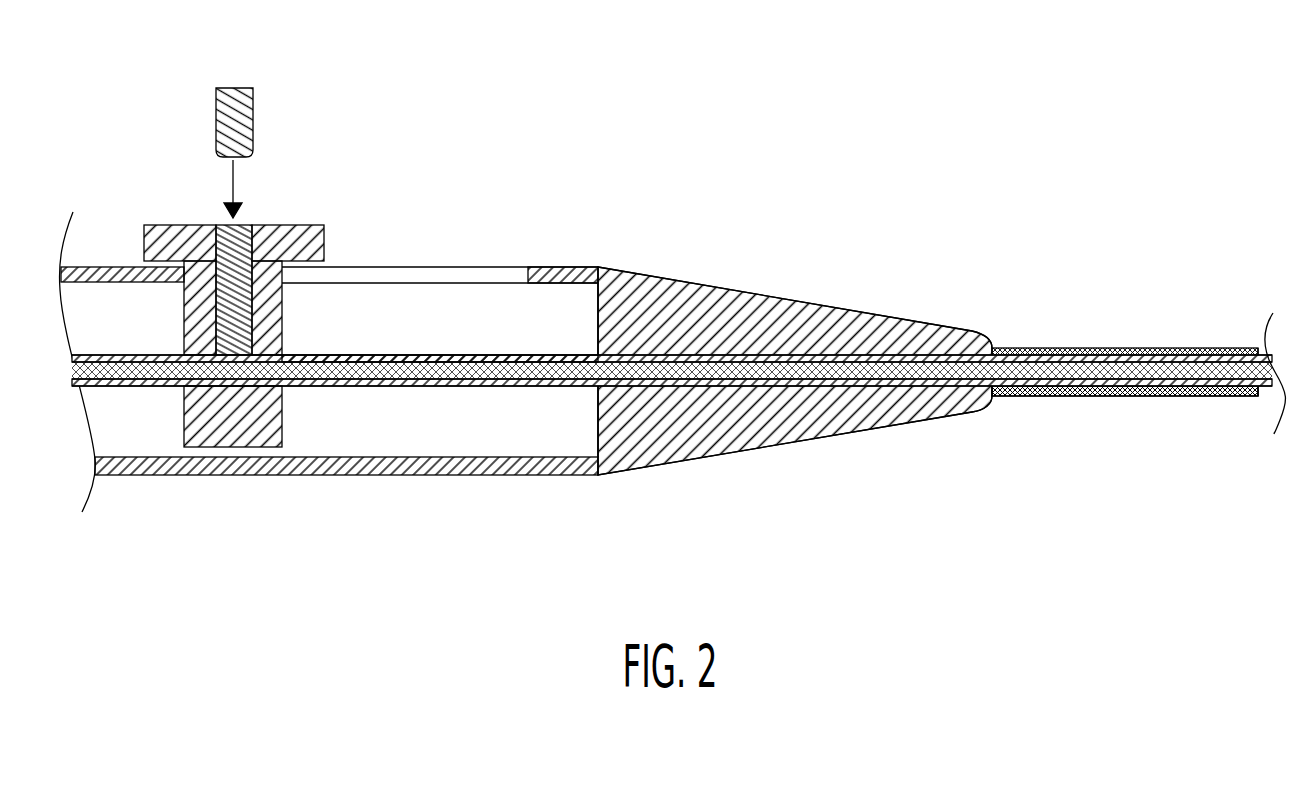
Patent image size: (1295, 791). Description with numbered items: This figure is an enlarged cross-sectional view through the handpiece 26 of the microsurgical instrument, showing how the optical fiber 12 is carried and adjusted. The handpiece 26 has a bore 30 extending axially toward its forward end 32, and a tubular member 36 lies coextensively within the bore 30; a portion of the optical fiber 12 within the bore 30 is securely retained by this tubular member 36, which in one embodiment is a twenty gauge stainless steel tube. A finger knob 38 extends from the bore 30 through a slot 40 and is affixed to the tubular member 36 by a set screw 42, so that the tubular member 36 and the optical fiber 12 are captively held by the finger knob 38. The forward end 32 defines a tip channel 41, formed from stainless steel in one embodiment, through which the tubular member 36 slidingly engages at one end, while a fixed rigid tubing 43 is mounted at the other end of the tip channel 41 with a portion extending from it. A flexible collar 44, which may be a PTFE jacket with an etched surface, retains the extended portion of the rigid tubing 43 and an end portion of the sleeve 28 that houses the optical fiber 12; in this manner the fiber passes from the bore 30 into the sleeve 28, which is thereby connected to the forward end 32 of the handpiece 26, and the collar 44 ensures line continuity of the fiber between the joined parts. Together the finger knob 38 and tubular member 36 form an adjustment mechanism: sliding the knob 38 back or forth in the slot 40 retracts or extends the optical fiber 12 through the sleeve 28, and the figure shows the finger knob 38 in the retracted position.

The optical fiber 12 is at (532, 390).
The handpiece 26 is at (574, 268).
The sleeve 28 is at (1263, 352).
The bore 30 is at (343, 433).
The forward end 32 is at (855, 243).
The tubular member 36 is at (463, 355).
The finger knob 38 is at (163, 224).
The slot 40 is at (395, 276).
The tip channel 41 is at (757, 355).
The set screw 42 is at (254, 117).
The rigid tubing 43 is at (1073, 396).
The flexible collar 44 is at (1043, 349).